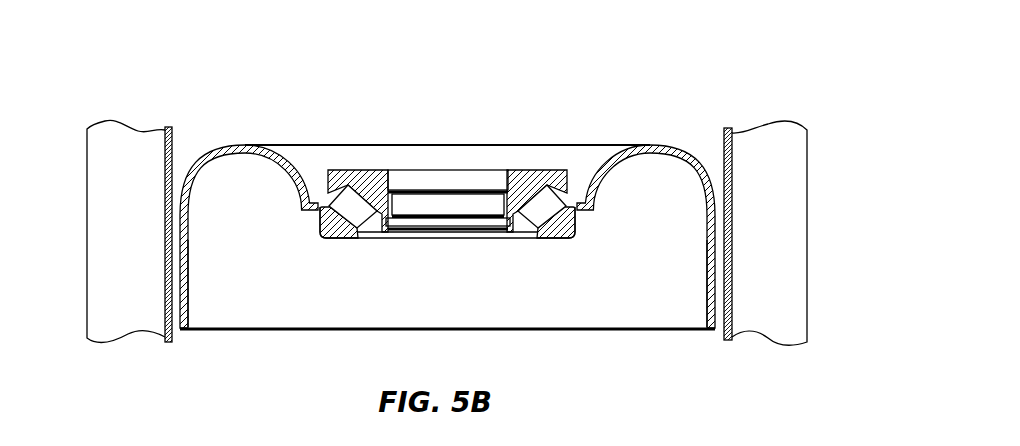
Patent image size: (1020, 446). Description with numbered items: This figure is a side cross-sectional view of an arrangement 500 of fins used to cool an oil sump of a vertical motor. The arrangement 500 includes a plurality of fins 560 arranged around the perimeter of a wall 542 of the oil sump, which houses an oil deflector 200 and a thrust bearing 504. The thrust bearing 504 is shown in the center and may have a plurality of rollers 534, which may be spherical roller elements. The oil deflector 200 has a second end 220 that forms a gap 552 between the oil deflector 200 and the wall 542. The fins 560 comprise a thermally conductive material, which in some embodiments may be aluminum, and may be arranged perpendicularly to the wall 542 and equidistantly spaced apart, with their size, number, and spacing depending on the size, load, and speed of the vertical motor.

The arrangement 500 is at (745, 68).
The oil deflector 200 is at (288, 158).
The second end 220 is at (190, 320).
The thrust bearing 504 is at (393, 166).
The rollers 534 is at (540, 208).
The wall 542 is at (175, 140).
The gap 552 is at (118, 272).
The fins 560 is at (113, 325).